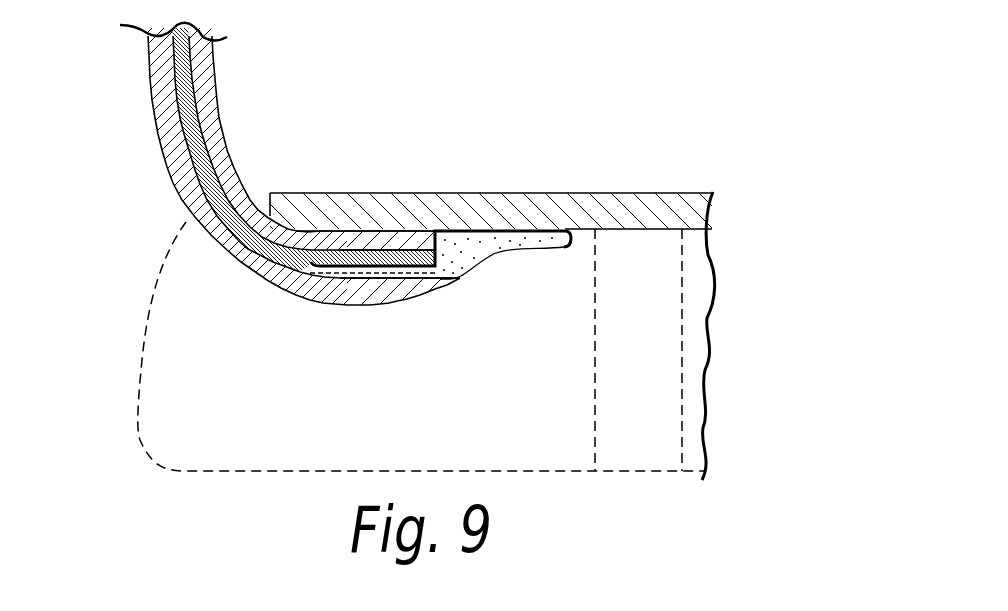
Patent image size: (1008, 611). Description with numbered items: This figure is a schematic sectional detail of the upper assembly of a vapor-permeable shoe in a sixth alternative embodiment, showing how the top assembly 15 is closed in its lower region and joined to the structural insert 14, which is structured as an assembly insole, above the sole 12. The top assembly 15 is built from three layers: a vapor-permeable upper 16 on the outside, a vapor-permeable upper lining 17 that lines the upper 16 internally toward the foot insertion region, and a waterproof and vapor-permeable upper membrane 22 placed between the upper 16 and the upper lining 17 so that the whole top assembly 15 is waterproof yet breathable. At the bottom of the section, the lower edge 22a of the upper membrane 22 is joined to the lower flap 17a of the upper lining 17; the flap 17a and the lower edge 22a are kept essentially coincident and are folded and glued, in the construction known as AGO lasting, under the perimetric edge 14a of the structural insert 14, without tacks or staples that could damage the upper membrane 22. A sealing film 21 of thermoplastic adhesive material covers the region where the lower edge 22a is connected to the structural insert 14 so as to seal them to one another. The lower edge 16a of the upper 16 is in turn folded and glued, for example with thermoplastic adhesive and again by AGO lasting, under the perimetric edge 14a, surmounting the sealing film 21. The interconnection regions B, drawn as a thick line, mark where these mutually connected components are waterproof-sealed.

The sole 12 is at (124, 404).
The structural insert 14 is at (594, 190).
The perimetric edge 14a is at (300, 203).
The top assembly 15 is at (153, 122).
The vapor-permeable upper 16 is at (152, 77).
The lower edge 16a is at (333, 305).
The vapor-permeable upper lining 17 is at (215, 82).
The lower flap 17a is at (407, 243).
The sealing film 21 is at (462, 275).
The waterproof and vapor-permeable upper membrane 22 is at (201, 135).
The lower edge 22a is at (357, 262).
The interconnection regions B is at (505, 215).